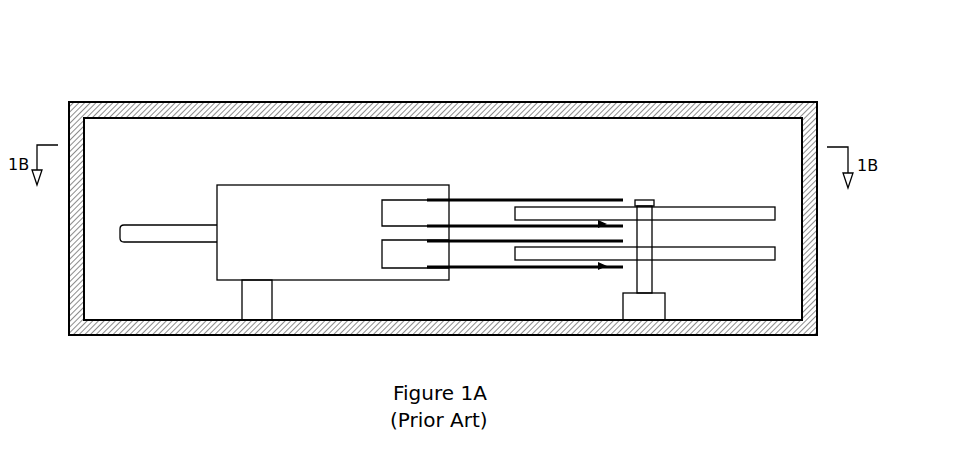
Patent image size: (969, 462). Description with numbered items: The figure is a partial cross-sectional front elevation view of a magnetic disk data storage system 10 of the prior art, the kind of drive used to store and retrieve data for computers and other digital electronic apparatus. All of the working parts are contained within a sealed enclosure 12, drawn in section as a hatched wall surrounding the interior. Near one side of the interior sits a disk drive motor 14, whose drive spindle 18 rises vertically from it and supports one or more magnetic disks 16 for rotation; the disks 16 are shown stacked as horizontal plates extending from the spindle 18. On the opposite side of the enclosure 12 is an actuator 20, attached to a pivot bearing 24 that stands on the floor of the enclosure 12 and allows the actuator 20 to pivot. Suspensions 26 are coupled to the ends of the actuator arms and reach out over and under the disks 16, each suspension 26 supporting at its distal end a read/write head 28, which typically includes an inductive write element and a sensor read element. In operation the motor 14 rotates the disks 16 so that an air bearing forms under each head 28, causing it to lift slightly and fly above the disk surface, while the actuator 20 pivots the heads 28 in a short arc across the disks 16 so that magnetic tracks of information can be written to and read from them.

The magnetic disk data storage system 10 is at (664, 64).
The sealed enclosure 12 is at (383, 337).
The disk drive motor 14 is at (648, 322).
The magnetic disks 16 is at (715, 207).
The drive spindle 18 is at (645, 199).
The actuator 20 is at (281, 172).
The pivot bearing 24 is at (252, 338).
The suspensions 26 is at (467, 198).
The read/write head 28 is at (603, 223).